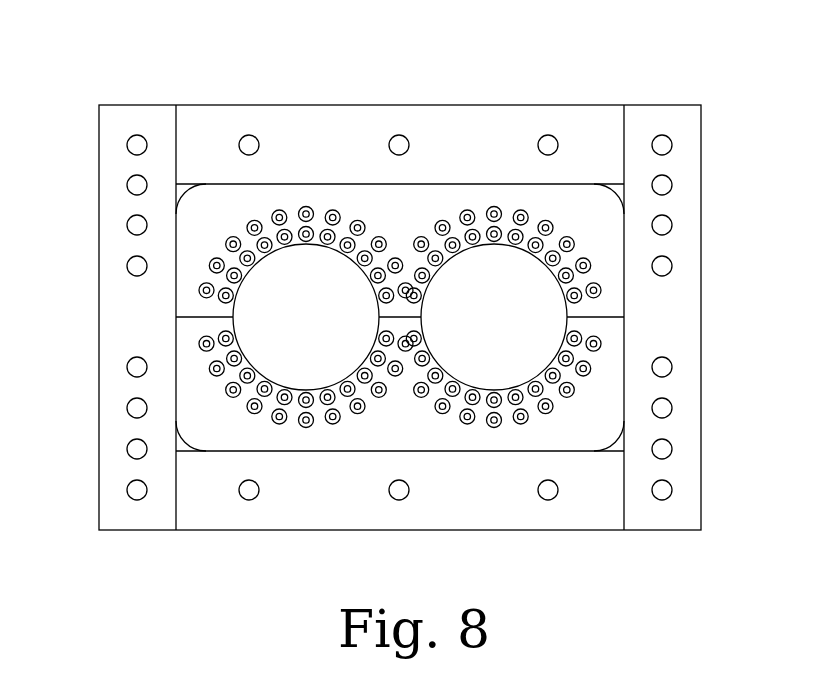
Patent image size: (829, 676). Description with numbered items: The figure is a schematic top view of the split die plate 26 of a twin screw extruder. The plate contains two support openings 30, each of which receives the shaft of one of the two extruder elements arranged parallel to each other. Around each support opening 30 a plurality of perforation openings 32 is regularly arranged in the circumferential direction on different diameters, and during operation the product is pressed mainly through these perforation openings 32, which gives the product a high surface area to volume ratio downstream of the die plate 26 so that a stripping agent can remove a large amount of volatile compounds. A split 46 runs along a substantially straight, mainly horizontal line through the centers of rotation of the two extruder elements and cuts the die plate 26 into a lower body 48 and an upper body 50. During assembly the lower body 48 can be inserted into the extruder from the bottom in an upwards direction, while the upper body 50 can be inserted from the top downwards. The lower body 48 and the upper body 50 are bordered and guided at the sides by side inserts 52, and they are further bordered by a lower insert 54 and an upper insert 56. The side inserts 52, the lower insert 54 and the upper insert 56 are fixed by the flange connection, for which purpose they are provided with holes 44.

The die plate 26 is at (213, 212).
The support opening 30 is at (287, 357).
The perforation opening 32 is at (337, 206).
The hole 44 is at (399, 140).
The split 46 is at (198, 315).
The lower body 48 is at (592, 389).
The upper body 50 is at (597, 234).
The side insert 52 is at (113, 341).
The lower insert 54 is at (314, 493).
The upper insert 56 is at (306, 135).